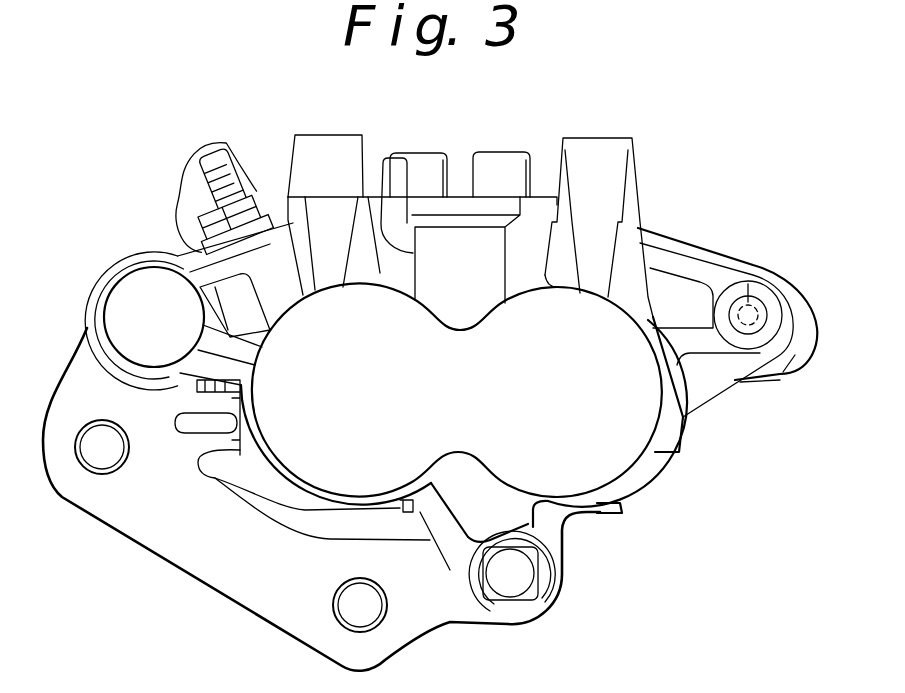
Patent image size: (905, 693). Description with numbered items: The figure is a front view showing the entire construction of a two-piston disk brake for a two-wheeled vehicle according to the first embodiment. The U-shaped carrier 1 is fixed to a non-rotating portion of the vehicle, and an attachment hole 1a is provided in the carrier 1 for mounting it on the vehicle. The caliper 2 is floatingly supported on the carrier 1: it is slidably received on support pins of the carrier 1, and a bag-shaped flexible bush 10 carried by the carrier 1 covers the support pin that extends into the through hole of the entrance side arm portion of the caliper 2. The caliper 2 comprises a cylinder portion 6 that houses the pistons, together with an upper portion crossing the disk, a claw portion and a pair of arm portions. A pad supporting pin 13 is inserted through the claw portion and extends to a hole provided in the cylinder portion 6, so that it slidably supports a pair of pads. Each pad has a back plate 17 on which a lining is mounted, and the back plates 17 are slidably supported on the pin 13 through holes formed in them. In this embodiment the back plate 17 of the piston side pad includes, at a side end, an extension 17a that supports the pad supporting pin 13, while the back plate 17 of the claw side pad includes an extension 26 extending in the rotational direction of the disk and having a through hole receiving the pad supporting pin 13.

The carrier 1 is at (198, 579).
The attachment hole 1a is at (93, 458).
The caliper 2 is at (500, 152).
The cylinder portion 6 is at (607, 452).
The bush 10 is at (518, 576).
The pad supporting pin 13 is at (744, 278).
The back plate 17 is at (691, 409).
The extension 17a is at (727, 380).
The extension 26 is at (777, 360).